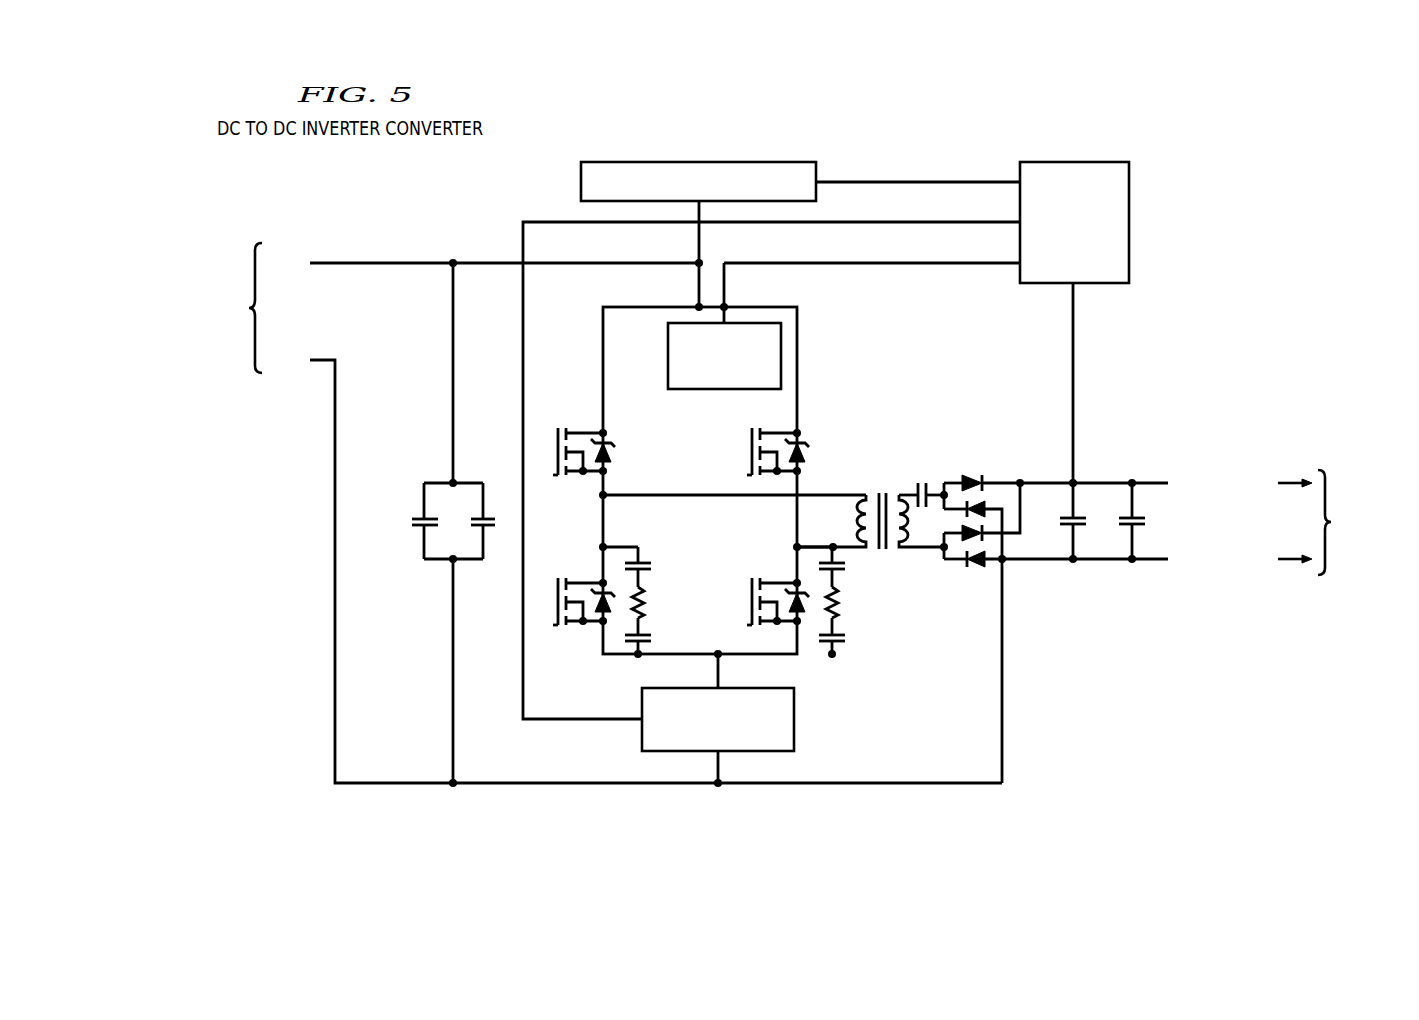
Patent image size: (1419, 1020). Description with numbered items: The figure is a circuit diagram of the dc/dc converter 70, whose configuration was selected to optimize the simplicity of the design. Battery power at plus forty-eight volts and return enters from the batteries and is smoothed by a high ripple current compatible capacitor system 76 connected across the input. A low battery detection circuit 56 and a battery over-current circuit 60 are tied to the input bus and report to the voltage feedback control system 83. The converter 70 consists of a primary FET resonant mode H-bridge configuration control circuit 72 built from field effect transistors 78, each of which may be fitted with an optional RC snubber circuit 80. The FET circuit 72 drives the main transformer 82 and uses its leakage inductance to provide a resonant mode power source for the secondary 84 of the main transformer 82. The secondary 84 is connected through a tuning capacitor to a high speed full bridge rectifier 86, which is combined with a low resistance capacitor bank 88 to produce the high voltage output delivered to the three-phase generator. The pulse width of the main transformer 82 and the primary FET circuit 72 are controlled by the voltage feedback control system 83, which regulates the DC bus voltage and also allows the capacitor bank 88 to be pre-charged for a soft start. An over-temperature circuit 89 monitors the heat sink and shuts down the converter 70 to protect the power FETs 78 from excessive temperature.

The dc/dc converter 70 is at (396, 198).
The low battery detection circuit 56 is at (777, 162).
The voltage feedback control system 83 is at (1086, 162).
The over-temperature circuit 89 is at (668, 355).
The field effect transistors 78 is at (572, 419).
The primary FET resonant mode H-bridge configuration control circuit 72 is at (668, 554).
The RC snubber circuits 80 is at (673, 614).
The high ripple current compatible capacitor system 76 is at (463, 531).
The main transformer 82 is at (848, 532).
The secondary 84 is at (938, 532).
The high speed full bridge rectifier 86 is at (985, 469).
The low resistance capacitor bank 88 is at (1113, 531).
The battery over-current circuit 60 is at (794, 719).